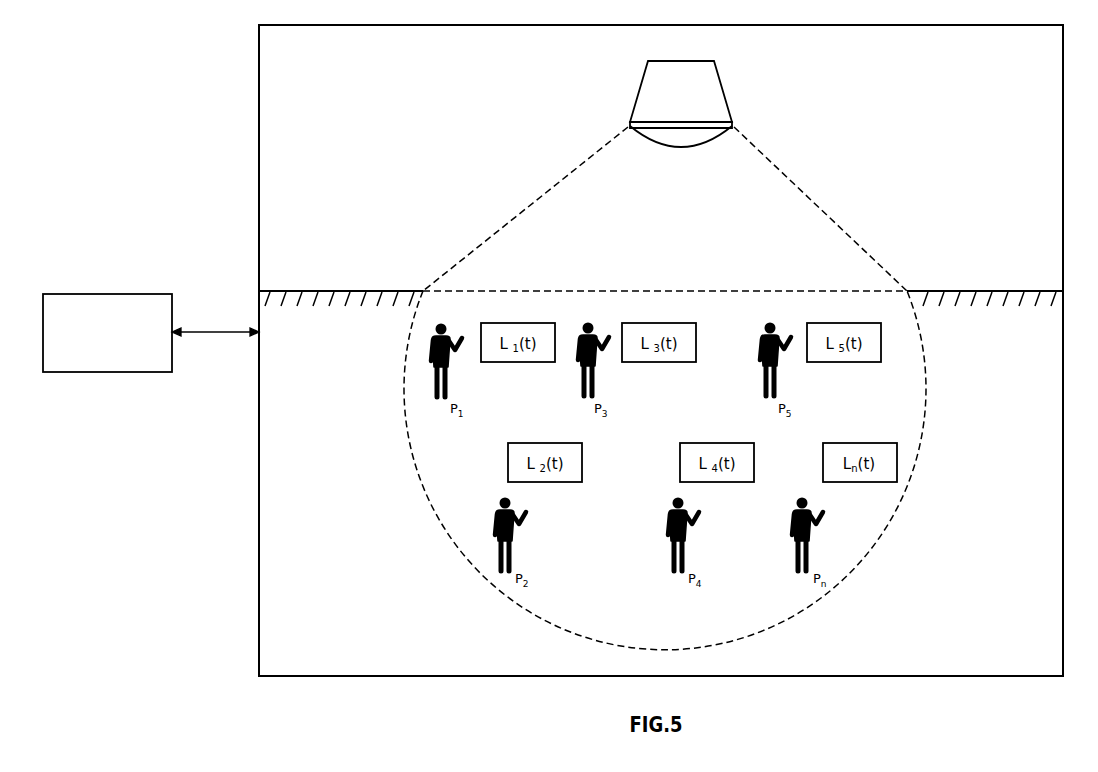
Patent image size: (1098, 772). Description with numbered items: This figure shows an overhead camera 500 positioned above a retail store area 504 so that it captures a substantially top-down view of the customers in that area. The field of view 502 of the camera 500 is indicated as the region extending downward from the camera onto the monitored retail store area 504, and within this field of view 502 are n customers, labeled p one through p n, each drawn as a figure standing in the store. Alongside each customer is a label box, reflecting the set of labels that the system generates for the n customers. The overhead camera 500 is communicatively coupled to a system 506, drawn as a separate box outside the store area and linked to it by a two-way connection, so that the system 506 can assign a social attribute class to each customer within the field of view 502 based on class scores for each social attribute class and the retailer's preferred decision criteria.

The camera 500 is at (632, 92).
The field of view 502 is at (695, 255).
The retail store area 504 is at (334, 644).
The system 506 is at (80, 293).